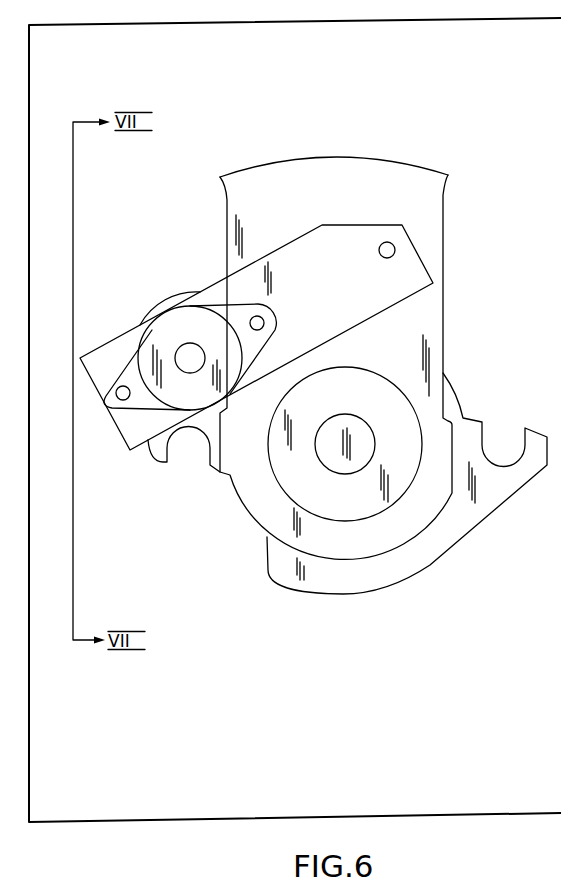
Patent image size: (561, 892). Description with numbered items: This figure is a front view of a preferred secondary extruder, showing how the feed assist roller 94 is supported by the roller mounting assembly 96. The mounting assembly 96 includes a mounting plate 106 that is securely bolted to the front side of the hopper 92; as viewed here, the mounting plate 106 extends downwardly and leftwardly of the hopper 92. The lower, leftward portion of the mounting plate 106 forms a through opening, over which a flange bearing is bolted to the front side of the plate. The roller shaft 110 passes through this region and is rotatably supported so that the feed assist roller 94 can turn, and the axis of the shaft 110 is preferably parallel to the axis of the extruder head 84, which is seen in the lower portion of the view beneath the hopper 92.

The pulley 84 is at (280, 517).
The housing 92 is at (415, 203).
The pulley 94 is at (165, 305).
The pump assembly 96 is at (203, 231).
The mounting plate 106 is at (353, 302).
The shaft 110 is at (176, 351).